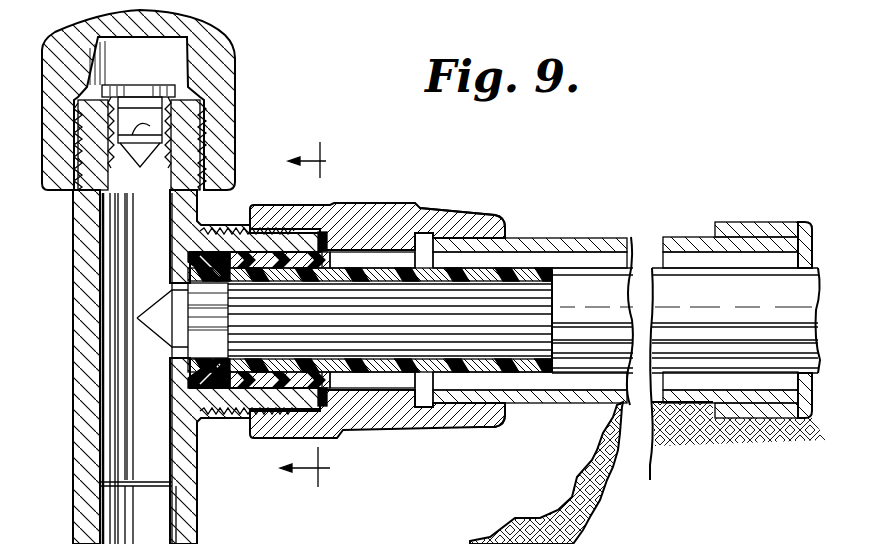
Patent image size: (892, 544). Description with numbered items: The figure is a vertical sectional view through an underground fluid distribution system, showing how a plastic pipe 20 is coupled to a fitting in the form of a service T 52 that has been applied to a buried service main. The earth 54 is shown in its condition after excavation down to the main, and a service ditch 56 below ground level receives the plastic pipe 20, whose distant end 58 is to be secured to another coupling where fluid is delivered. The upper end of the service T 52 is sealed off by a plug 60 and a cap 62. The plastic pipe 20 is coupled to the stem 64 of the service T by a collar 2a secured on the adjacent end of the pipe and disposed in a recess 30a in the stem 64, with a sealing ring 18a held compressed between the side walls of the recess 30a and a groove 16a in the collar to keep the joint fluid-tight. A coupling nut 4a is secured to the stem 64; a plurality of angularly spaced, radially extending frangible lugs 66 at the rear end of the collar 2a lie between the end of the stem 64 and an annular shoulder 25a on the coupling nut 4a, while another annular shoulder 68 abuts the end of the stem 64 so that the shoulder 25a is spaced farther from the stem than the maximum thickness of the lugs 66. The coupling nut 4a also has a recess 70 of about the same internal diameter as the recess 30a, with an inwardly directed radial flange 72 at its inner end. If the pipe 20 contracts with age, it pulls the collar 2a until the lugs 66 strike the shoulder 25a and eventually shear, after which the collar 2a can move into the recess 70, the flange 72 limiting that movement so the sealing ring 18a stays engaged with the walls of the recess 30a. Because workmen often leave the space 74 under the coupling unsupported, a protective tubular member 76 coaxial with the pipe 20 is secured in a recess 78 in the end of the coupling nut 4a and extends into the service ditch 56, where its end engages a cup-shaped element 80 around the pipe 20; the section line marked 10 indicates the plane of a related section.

The collar 2a is at (262, 228).
The coupling nut 4a is at (442, 214).
The section line 10 is at (316, 317).
The groove 16a is at (233, 303).
The sealing ring 18a is at (218, 256).
The plastic pipe 20 is at (600, 319).
The annular shoulder 25a is at (324, 250).
The recess 30a is at (270, 378).
The service T 52 is at (72, 371).
The earth 54 is at (488, 538).
The service ditch 56 is at (676, 440).
The end of the plastic pipe 58 is at (811, 270).
The plug 60 is at (138, 126).
The cap 62 is at (233, 54).
The stem 64 is at (238, 414).
The frangible lugs 66 is at (342, 228).
The annular shoulder 68 is at (323, 234).
The recess 70 is at (386, 262).
The radial flange 72 is at (424, 274).
The space 74 is at (363, 526).
The protective tubular member 76 is at (684, 242).
The recess 78 is at (502, 238).
The cup-shaped element 80 is at (752, 230).